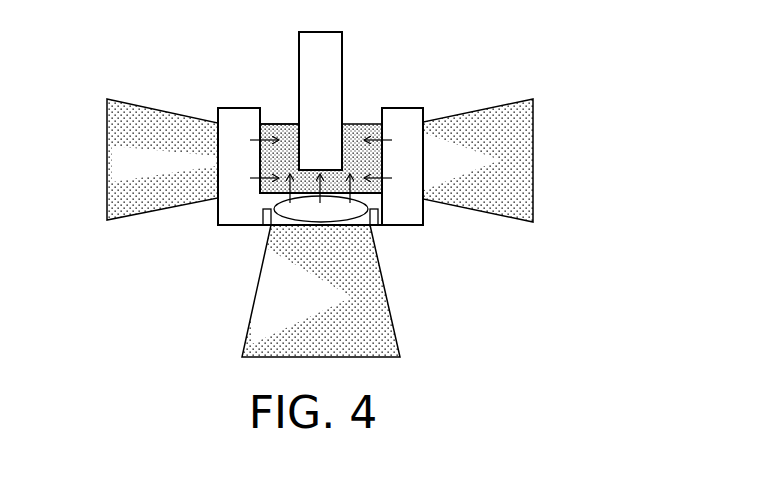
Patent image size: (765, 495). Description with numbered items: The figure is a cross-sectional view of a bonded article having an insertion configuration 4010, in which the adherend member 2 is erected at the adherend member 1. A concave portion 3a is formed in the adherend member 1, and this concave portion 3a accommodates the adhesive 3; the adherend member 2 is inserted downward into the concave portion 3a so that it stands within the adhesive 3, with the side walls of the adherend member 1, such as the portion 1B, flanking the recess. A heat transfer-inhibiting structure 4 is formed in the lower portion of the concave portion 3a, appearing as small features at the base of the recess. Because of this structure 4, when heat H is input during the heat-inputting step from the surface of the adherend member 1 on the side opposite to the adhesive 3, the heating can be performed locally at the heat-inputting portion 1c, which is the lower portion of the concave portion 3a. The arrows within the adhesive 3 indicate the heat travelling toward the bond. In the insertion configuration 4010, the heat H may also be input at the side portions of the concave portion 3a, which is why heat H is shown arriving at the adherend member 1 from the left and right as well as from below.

The insertion configuration 4010 is at (563, 66).
The adherend member 1 is at (425, 216).
The side wall portion 1B is at (414, 108).
The heat-inputting portion 1c is at (290, 213).
The adherend member 2 is at (343, 74).
The adhesive 3 is at (358, 125).
The concave portion 3a is at (262, 123).
The heat transfer-inhibiting structure 4 is at (262, 217).
The heat H is at (150, 112).